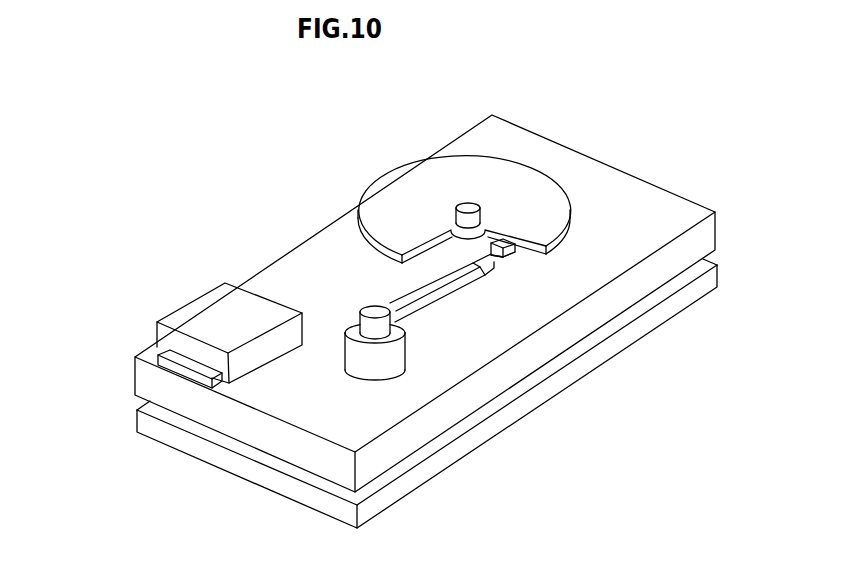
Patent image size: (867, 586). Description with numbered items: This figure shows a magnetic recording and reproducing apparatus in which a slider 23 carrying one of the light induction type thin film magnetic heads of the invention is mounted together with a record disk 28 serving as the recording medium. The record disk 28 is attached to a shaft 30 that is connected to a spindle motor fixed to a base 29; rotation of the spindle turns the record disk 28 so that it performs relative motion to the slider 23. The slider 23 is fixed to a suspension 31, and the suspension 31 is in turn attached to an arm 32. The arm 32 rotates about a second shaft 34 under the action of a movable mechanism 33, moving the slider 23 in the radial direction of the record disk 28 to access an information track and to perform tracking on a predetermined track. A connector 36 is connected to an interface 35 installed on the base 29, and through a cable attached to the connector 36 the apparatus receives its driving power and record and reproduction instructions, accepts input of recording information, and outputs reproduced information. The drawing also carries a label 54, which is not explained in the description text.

The slider 23 is at (505, 252).
The record disk 28 is at (488, 182).
The base 29 is at (426, 321).
The shaft 30 is at (467, 202).
The suspension 31 is at (495, 262).
The arm 32 is at (412, 303).
The movable mechanism 33 is at (390, 365).
The shaft 34 is at (375, 333).
The interface 35 is at (226, 316).
The connector 36 is at (177, 368).
The lower base plate 54 is at (578, 292).